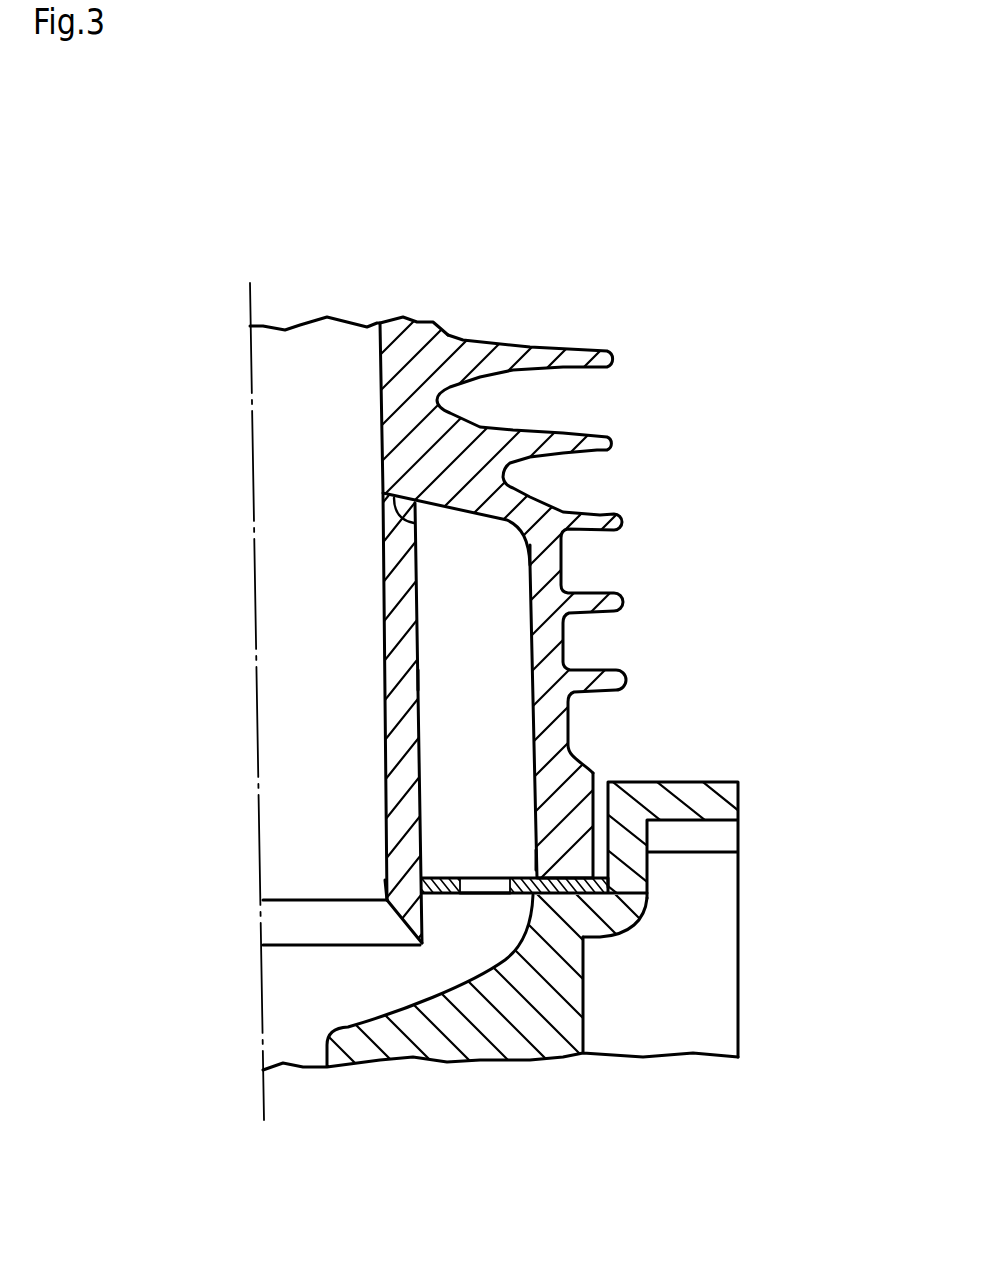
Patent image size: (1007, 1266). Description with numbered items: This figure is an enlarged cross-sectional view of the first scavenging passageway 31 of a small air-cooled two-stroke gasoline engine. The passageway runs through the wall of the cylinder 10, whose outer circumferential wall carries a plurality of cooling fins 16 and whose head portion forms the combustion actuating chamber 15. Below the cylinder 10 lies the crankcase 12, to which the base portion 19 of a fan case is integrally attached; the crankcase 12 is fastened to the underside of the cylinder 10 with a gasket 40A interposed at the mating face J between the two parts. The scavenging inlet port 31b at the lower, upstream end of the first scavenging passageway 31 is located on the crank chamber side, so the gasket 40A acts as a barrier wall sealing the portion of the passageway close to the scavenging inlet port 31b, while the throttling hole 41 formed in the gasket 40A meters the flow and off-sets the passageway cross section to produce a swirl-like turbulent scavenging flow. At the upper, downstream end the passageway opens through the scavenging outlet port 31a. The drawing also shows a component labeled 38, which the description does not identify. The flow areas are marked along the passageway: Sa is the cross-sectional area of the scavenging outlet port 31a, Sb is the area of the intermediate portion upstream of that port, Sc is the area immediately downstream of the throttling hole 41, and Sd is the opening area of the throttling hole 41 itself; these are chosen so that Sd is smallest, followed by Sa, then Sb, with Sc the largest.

The cylinder 10 is at (471, 322).
The crankcase 12 is at (598, 1010).
The combustion actuating chamber 15 is at (332, 373).
The cooling fins 16 is at (618, 440).
The base portion of a fan case 19 is at (713, 983).
The first scavenging passageway 31 is at (492, 680).
The scavenging outlet port 31a is at (393, 522).
The scavenging inlet port 31b is at (410, 982).
The step portion 38 is at (388, 857).
The gasket 40A is at (595, 878).
The throttling hole 41 is at (497, 890).
The mating face J is at (630, 900).
The cross-sectional area of the scavenging outlet port Sa is at (478, 546).
The cross-sectional area of the intermediate portion Sb is at (420, 680).
The cross-sectional area immediately downstream of the throttling hole Sc is at (535, 857).
The opening area of the throttling hole Sd is at (482, 888).